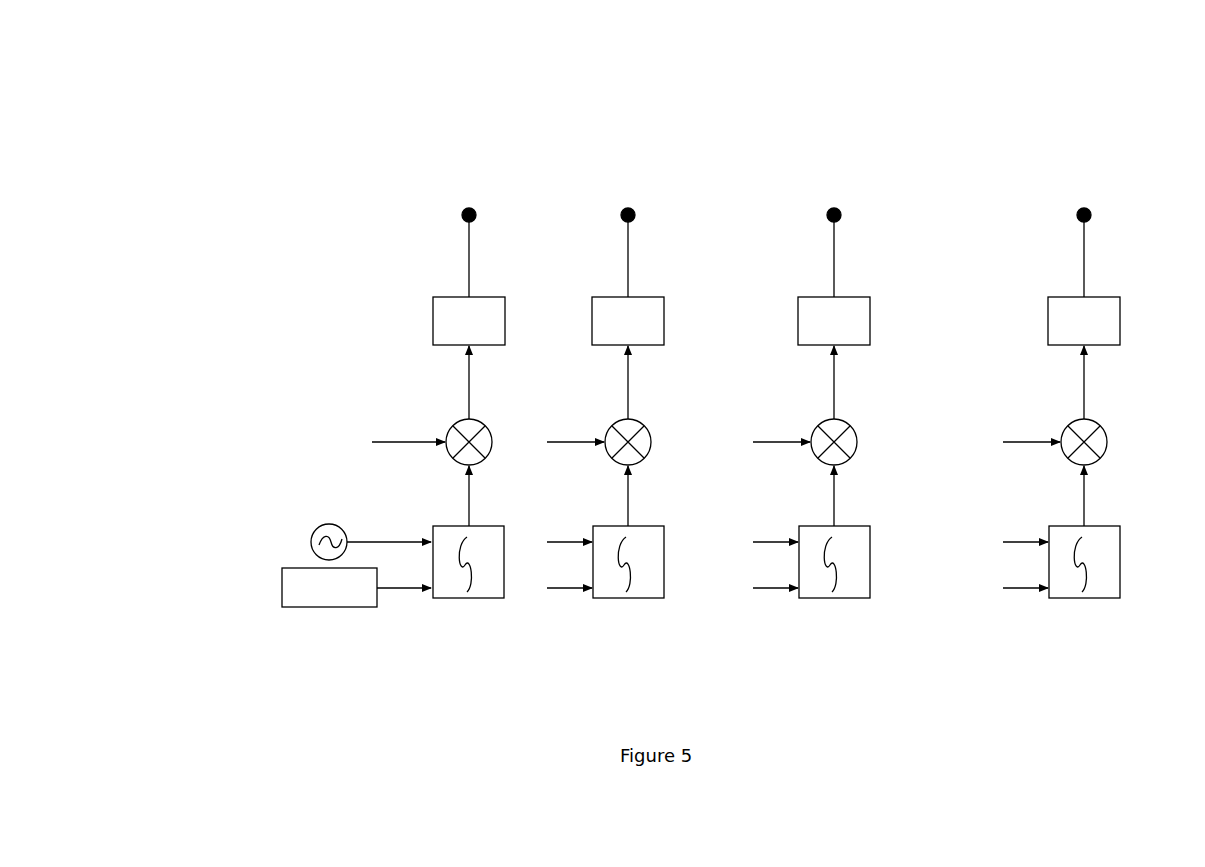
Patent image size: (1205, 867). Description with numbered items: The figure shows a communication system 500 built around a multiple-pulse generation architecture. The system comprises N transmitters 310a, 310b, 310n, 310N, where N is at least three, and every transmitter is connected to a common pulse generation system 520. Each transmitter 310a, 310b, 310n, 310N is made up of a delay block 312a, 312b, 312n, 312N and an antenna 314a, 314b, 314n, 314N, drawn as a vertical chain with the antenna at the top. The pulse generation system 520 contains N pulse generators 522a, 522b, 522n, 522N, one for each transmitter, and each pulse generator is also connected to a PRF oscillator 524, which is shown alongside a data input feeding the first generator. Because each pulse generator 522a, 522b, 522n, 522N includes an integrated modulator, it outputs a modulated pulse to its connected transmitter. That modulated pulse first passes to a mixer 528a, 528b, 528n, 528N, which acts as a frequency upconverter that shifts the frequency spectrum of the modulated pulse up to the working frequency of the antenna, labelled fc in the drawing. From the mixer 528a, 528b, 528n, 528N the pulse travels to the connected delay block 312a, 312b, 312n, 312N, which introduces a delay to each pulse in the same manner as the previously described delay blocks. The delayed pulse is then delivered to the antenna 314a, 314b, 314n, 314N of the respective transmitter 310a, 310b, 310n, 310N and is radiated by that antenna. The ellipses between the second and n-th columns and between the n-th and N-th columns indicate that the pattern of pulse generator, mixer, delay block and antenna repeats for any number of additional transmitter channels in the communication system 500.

The communication system 500 is at (217, 134).
The pulse generation system 520 is at (273, 470).
The PRF oscillator 524 is at (311, 540).
The antenna 314a is at (466, 206).
The antenna 314b is at (625, 206).
The antenna 314n is at (831, 206).
The antenna 314N is at (1081, 206).
The transmitter 310a is at (428, 262).
The transmitter 310b is at (604, 250).
The transmitter 310n is at (805, 245).
The transmitter 310N is at (1056, 250).
The delay block 312a is at (432, 330).
The delay block 312b is at (592, 327).
The delay block 312n is at (798, 327).
The delay block 312N is at (1048, 327).
The mixer 528a is at (447, 437).
The mixer 528b is at (612, 425).
The mixer 528n is at (892, 408).
The mixer 528N is at (1107, 428).
The pulse generator 522a is at (462, 598).
The pulse generator 522b is at (623, 598).
The pulse generator 522n is at (830, 598).
The pulse generator 522N is at (1080, 598).